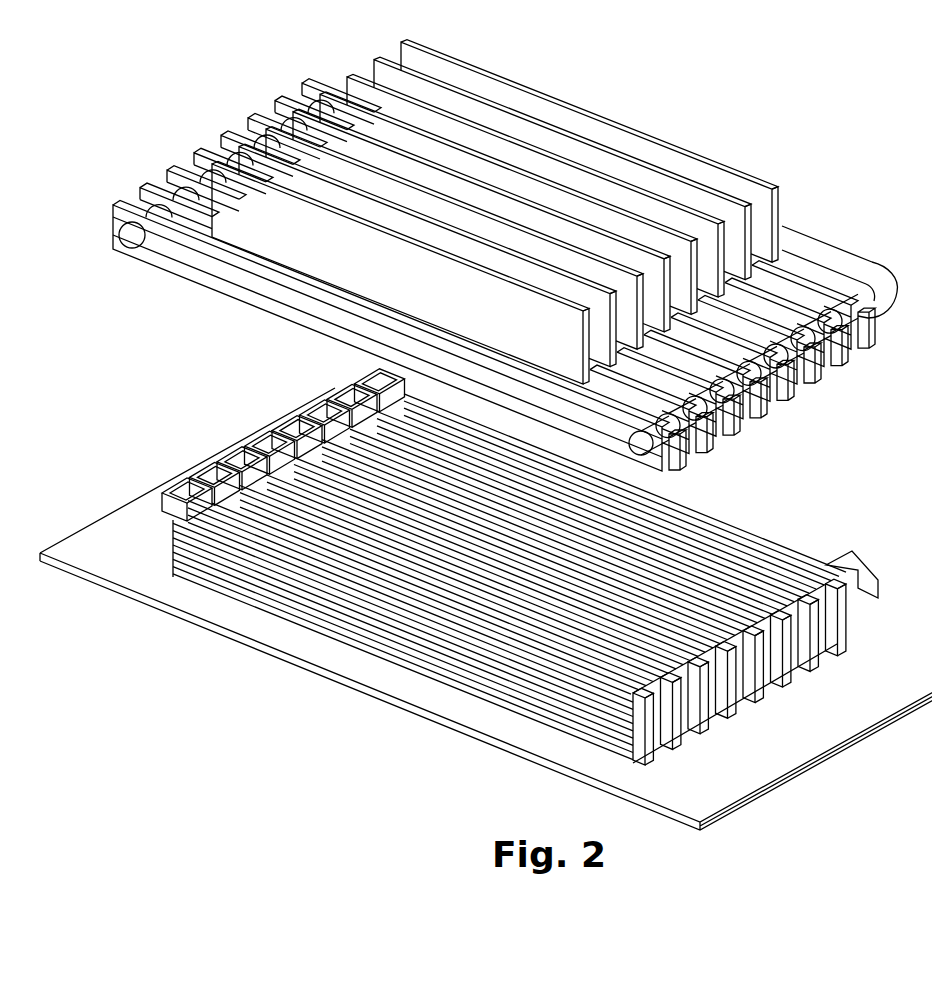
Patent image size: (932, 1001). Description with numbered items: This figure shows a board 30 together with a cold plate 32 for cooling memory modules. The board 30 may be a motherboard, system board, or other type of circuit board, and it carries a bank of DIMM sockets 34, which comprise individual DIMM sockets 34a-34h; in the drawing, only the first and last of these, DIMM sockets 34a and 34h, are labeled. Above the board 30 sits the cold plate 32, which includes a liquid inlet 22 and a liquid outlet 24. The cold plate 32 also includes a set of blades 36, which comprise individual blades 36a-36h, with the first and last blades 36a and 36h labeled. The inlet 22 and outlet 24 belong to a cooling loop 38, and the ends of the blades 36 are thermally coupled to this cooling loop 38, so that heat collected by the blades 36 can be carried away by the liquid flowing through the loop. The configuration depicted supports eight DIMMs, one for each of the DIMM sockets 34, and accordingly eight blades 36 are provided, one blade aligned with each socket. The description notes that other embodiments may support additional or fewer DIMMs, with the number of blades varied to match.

The liquid inlet 22 is at (627, 447).
The liquid outlet 24 is at (119, 242).
The board 30 is at (212, 627).
The cold plate 32 is at (212, 270).
The DIMM sockets 34 is at (537, 578).
The DIMM socket 34a is at (643, 753).
The DIMM socket 34h is at (845, 645).
The blades 36 is at (485, 212).
The blade 36a is at (302, 248).
The blade 36h is at (682, 154).
The cooling loop 38 is at (790, 356).